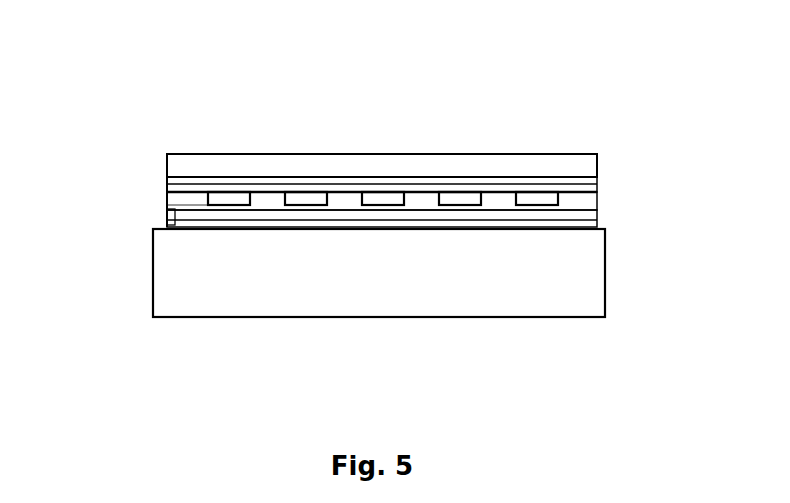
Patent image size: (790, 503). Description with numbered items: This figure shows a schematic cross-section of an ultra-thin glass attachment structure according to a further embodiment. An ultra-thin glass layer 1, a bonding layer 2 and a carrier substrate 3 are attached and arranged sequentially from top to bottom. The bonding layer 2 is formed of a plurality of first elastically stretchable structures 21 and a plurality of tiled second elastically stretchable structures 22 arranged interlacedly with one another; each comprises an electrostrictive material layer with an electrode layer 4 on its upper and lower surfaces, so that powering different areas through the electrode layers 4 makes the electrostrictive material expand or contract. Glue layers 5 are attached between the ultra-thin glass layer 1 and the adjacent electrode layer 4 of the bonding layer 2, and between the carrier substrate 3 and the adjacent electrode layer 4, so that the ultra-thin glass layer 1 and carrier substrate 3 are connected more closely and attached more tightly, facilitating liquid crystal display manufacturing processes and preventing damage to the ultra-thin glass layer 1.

The ultra-thin glass layer 1 is at (535, 168).
The bonding layer 2 is at (583, 204).
The carrier substrate 3 is at (588, 289).
The electrode layer 4 is at (167, 193).
The glue layer 5 is at (585, 183).
The first elastically stretchable structure 21 is at (183, 203).
The second elastically stretchable structure 22 is at (385, 198).